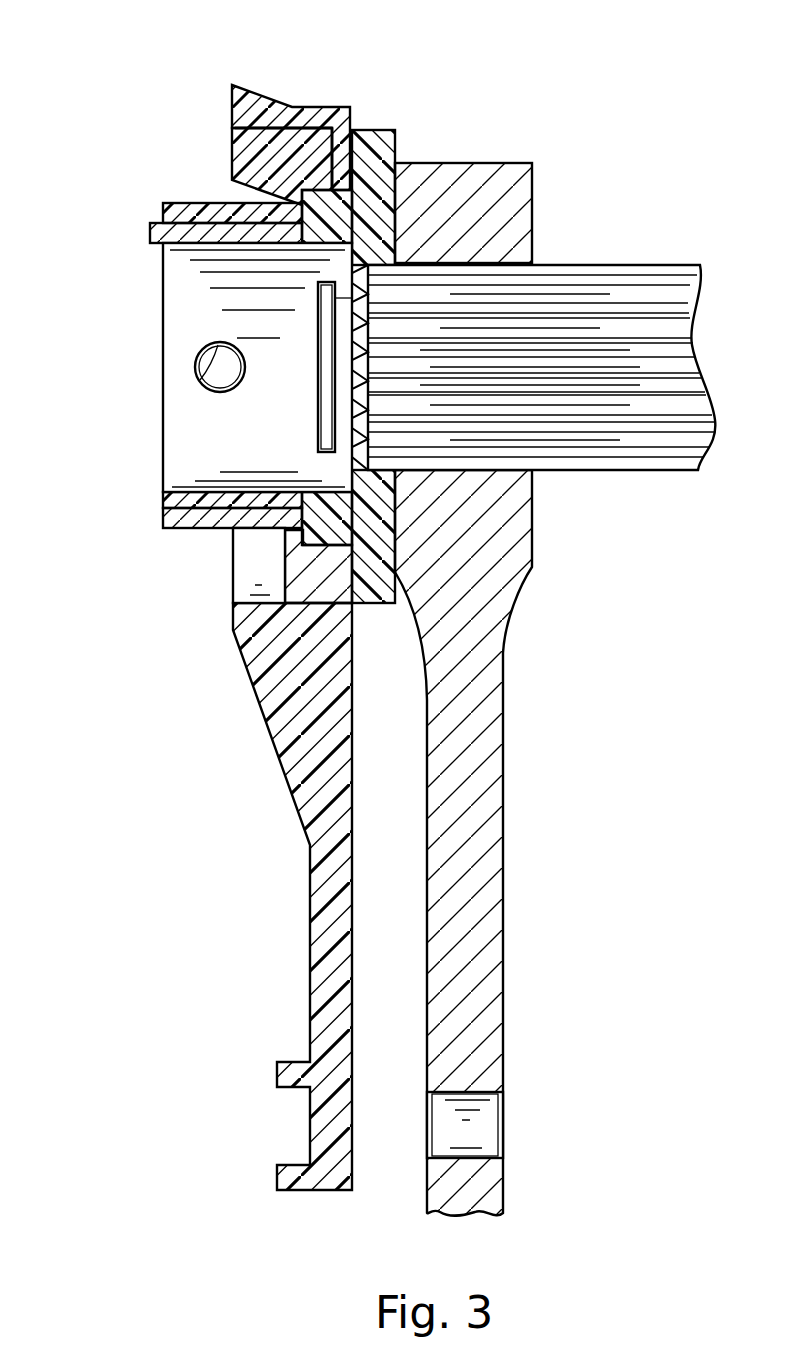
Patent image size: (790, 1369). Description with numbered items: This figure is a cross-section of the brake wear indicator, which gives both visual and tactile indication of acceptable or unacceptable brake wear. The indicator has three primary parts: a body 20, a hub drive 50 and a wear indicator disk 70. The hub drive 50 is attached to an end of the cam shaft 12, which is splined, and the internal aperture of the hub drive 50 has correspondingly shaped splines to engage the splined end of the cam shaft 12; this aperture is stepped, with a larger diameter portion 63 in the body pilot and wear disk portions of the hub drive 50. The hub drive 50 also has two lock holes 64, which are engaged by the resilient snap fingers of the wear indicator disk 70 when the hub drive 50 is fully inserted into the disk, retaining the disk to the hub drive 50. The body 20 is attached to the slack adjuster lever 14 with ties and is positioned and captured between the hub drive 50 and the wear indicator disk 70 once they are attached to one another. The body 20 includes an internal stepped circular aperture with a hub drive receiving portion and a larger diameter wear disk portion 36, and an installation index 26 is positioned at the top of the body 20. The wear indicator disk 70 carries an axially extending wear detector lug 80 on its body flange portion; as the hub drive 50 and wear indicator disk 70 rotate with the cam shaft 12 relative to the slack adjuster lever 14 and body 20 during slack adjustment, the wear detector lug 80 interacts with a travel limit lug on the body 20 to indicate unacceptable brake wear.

The cam shaft 12 is at (621, 263).
The slack adjuster lever 14 is at (457, 163).
The body 20 is at (320, 107).
The installation index 26 is at (244, 84).
The wear disk portion 36 is at (258, 607).
The hub drive 50 is at (369, 130).
The larger diameter portion 63 is at (150, 232).
The lock holes 64 is at (196, 364).
The wear indicator disk 70 is at (195, 528).
The wear detector lug 80 is at (232, 155).